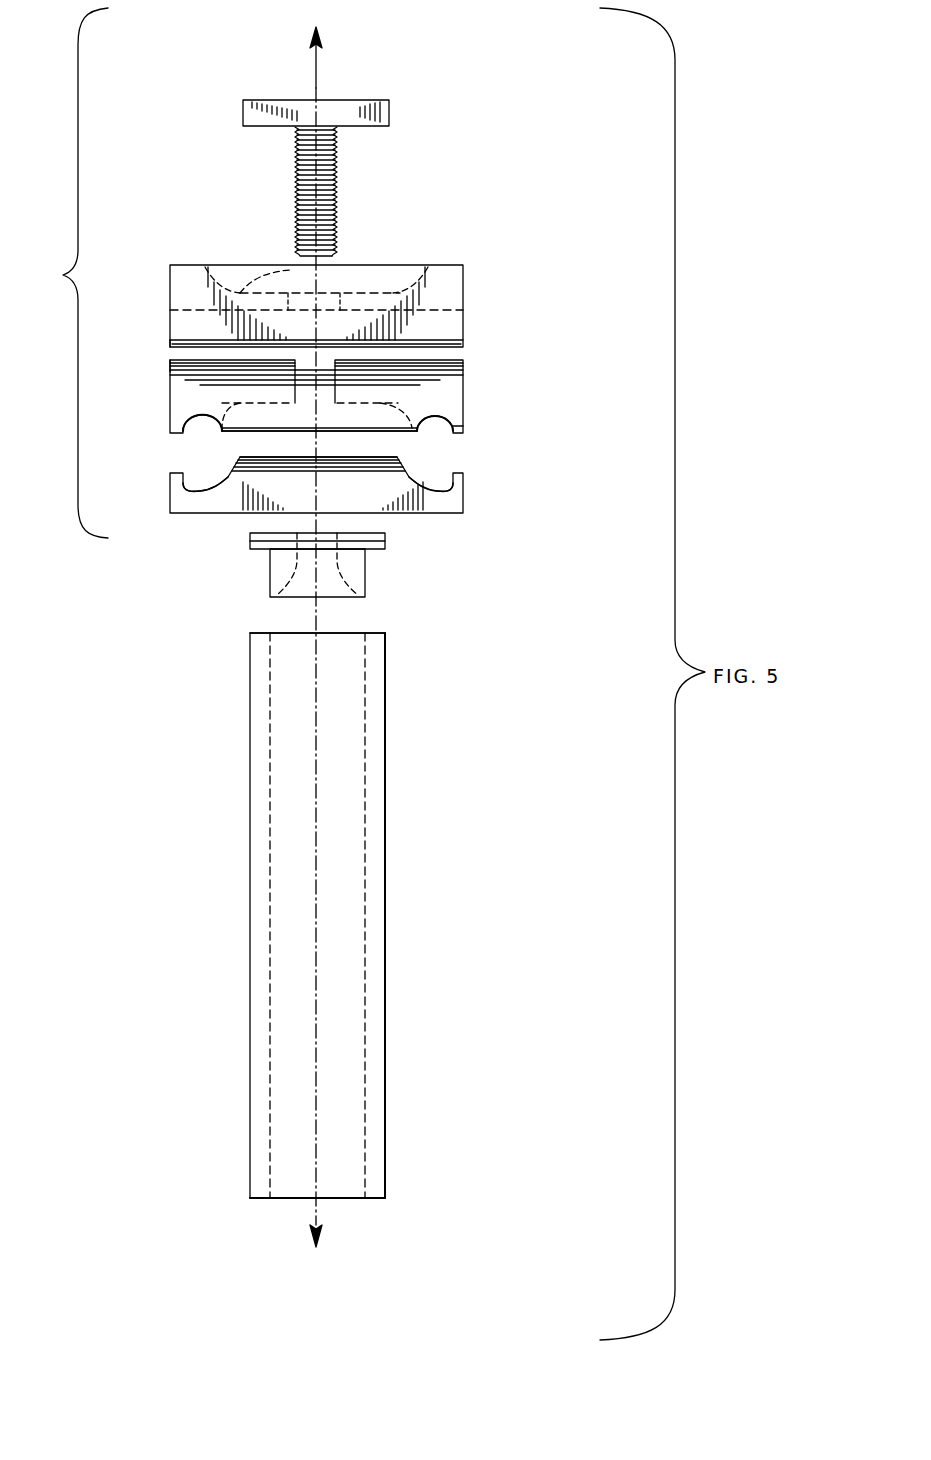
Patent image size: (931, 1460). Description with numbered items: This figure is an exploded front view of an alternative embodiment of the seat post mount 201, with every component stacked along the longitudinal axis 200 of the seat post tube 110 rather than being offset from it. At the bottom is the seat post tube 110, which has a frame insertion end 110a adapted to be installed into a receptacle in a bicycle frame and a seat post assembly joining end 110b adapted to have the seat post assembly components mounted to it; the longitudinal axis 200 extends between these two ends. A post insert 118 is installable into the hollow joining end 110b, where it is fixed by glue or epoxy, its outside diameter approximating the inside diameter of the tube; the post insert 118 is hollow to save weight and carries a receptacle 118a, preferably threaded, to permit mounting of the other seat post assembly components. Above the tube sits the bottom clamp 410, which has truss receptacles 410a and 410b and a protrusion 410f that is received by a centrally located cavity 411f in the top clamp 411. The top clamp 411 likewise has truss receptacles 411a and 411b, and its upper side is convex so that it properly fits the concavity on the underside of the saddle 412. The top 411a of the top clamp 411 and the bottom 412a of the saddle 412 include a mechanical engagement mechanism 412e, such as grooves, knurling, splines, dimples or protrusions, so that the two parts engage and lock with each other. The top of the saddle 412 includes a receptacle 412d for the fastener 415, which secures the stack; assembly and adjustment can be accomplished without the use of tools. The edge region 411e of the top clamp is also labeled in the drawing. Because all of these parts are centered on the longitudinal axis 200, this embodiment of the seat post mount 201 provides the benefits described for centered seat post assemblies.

The longitudinal axis 200 is at (320, 643).
The seat post mount 201 is at (69, 273).
The fastener 415 is at (390, 107).
The saddle 412 is at (463, 298).
The bottom of the saddle 412a is at (408, 349).
The receptacle 412d is at (390, 278).
The mechanical engagement mechanism 412e is at (170, 347).
The top clamp 411 is at (463, 398).
The top of the top clamp 411a is at (205, 425).
The truss receptacle 411b is at (438, 433).
The edge of intermediate block 411e is at (170, 362).
The centrally located cavity 411f is at (368, 413).
The bottom clamp 410 is at (463, 487).
The truss receptacle 410a is at (200, 485).
The truss receptacle 410b is at (435, 489).
The protrusion 410f is at (280, 452).
The post insert 118 is at (365, 568).
The receptacle 118a is at (332, 533).
The seat post tube 110 is at (387, 850).
The frame insertion end 110a is at (385, 1198).
The seat post assembly joining end 110b is at (385, 634).